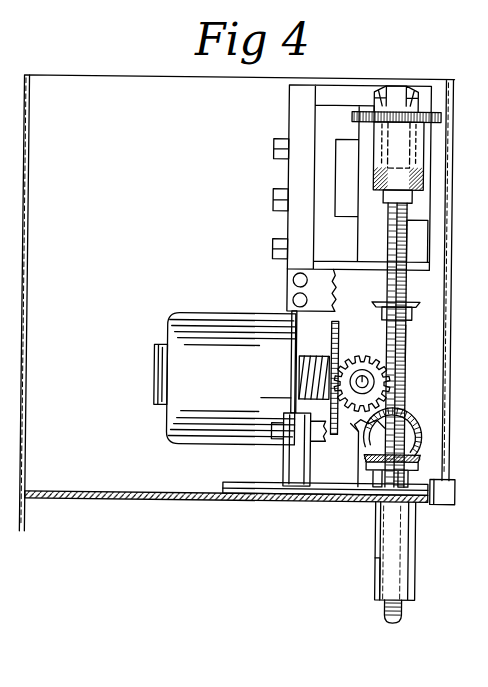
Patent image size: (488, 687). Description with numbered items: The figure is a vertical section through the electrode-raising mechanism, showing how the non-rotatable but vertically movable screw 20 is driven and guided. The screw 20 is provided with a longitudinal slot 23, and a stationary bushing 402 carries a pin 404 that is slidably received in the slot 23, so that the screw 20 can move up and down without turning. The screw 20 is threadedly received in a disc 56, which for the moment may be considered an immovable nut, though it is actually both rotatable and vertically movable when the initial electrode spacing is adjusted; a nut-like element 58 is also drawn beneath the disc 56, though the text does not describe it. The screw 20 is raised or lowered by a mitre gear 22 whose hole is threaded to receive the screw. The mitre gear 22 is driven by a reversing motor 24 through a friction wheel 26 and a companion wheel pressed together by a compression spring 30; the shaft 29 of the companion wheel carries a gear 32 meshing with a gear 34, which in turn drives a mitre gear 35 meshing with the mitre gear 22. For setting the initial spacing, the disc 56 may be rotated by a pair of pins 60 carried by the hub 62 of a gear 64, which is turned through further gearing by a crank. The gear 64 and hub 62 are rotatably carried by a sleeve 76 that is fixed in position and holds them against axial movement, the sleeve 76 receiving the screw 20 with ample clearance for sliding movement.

The screw 20 is at (406, 376).
The mitre gear 22 is at (412, 462).
The longitudinal slot 23 is at (388, 612).
The motor 24 is at (224, 378).
The friction wheel 26 is at (326, 295).
The shaft 29 is at (366, 374).
The compression spring 30 is at (324, 355).
The gear 32 is at (357, 421).
The gear 34 is at (360, 452).
The mitre gear 35 is at (400, 414).
The disc 56 is at (425, 297).
The nut 58 is at (412, 313).
The pins 60 is at (406, 342).
The hub 62 is at (422, 136).
The gear 64 is at (439, 117).
The sleeve 76 is at (411, 197).
The stationary bushing 402 is at (398, 527).
The pin 404 is at (380, 559).